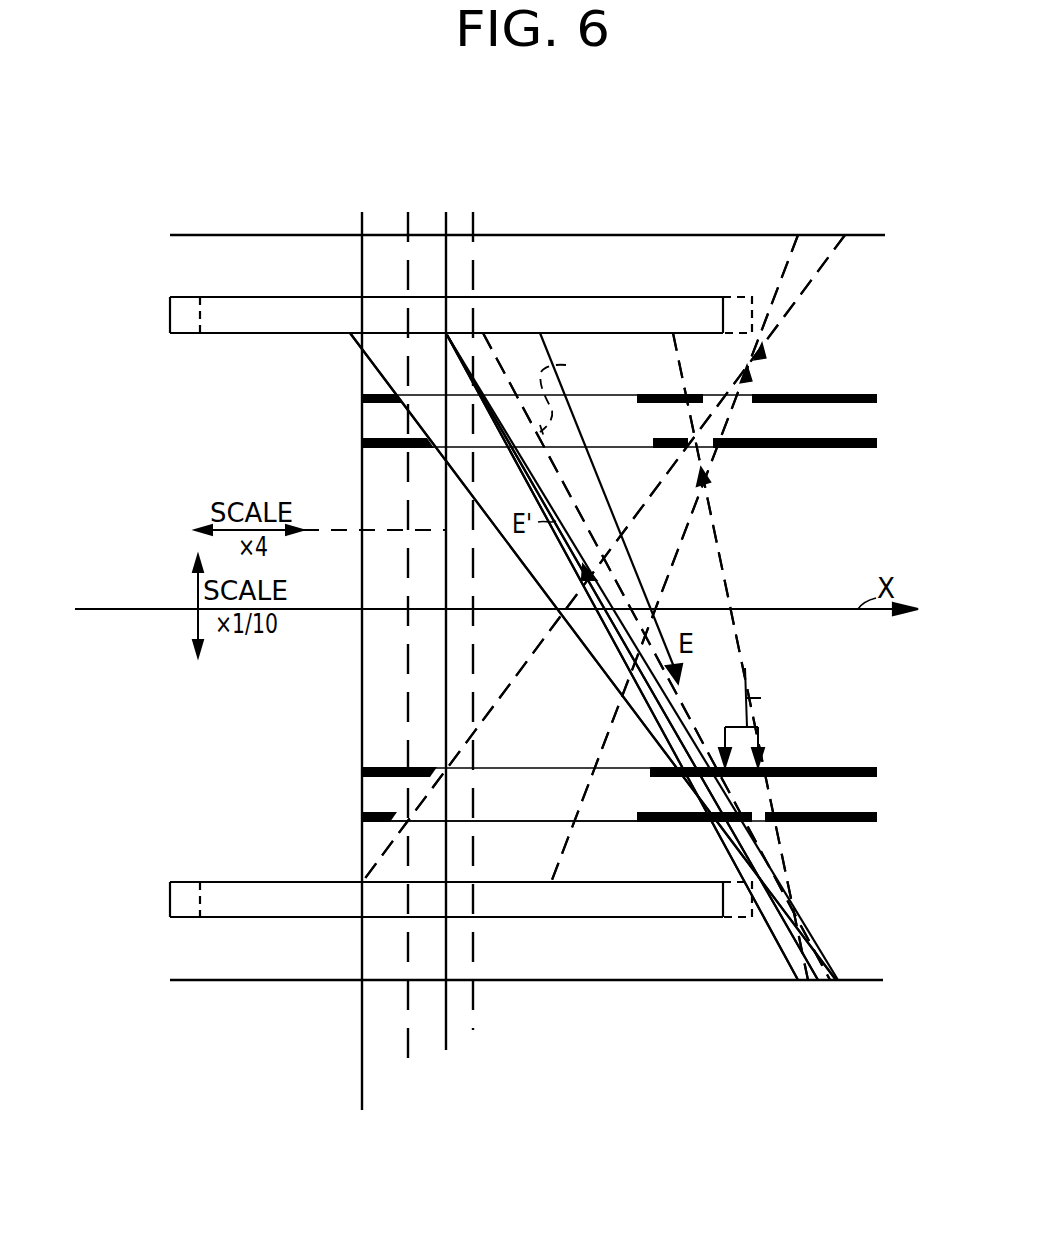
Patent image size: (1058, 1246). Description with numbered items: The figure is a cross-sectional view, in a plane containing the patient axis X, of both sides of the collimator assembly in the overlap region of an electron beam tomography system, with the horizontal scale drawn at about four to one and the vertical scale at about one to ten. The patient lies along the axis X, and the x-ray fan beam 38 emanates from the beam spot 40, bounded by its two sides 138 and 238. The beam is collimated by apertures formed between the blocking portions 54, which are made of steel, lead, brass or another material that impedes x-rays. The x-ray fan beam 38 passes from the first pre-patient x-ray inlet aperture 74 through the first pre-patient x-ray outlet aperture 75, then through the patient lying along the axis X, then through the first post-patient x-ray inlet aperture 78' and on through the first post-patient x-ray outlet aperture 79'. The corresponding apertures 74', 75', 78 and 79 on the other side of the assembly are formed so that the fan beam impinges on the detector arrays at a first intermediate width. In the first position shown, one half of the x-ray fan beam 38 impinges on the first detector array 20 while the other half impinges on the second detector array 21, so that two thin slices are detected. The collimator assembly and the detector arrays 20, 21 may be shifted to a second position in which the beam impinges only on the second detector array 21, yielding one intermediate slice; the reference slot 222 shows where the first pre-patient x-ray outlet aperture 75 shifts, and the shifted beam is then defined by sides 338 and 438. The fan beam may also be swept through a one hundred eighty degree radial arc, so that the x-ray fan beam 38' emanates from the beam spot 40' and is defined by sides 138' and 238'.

The x-ray detector array 20 is at (245, 297).
The x-ray detector array 21 is at (598, 297).
The x-ray fan beam 38 is at (642, 618).
The x-ray fan beam 38' is at (696, 686).
The beam spot 40 is at (686, 681).
The beam spot 40' is at (626, 538).
The blocking portions 54 is at (383, 439).
The first pre-patient x-ray inlet aperture 74 is at (821, 840).
The pre-patient x-ray inlet aperture 74' is at (808, 373).
The first pre-patient x-ray outlet aperture 75 is at (763, 717).
The pre-patient x-ray outlet aperture 75' is at (740, 656).
The post-patient x-ray inlet aperture 78 is at (622, 657).
The first post-patient x-ray inlet aperture 78' is at (632, 657).
The post-patient x-ray outlet aperture 79 is at (501, 850).
The first post-patient x-ray outlet aperture 79' is at (571, 656).
The side of x-ray fan beam 138 is at (593, 656).
The side of x-ray fan beam 138' is at (545, 560).
The reference slot 222 is at (762, 727).
The side of x-ray fan beam 238 is at (656, 656).
The side of x-ray fan beam 238' is at (703, 557).
The side of shifted x-ray fan beam 338 is at (726, 594).
The side of shifted x-ray fan beam 438 is at (576, 394).